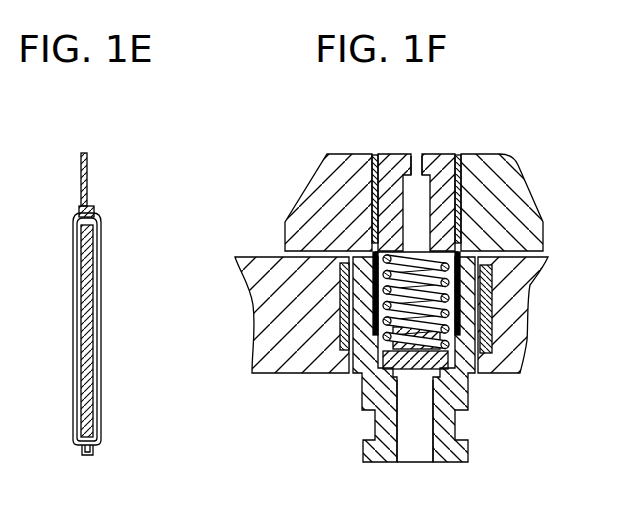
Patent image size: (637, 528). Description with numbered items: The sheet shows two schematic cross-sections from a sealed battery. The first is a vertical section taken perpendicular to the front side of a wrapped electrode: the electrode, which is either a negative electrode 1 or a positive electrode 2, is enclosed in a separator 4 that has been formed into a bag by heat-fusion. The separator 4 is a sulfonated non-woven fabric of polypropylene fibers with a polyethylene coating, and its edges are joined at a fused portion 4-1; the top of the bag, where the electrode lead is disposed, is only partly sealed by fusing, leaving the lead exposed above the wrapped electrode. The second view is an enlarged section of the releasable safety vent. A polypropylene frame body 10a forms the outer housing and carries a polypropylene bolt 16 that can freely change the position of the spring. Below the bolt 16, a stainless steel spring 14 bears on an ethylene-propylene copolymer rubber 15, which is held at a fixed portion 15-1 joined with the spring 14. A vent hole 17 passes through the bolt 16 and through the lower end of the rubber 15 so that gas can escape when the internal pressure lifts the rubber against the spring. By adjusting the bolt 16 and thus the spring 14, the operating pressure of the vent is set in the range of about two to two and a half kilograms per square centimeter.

In FIG. 1E, the negative electrode 1 is at (88, 247).
In FIG. 1E, the positive electrode 2 is at (139, 295).
In FIG. 1E, the separator 4 is at (102, 326).
In FIG. 1E, the fused portion of the separator 4-1 is at (93, 451).
In FIG. 1F, the polypropylene frame body 10a is at (508, 186).
In FIG. 1F, the stainless steel spring 14 is at (447, 280).
In FIG. 1F, the ethylene-propylene copolymer rubber 15 is at (383, 357).
In FIG. 1F, the fixed portion with the spring 15-1 is at (443, 358).
In FIG. 1F, the polypropylene bolt 16 is at (440, 167).
In FIG. 1F, the vent hole 17 is at (412, 152).